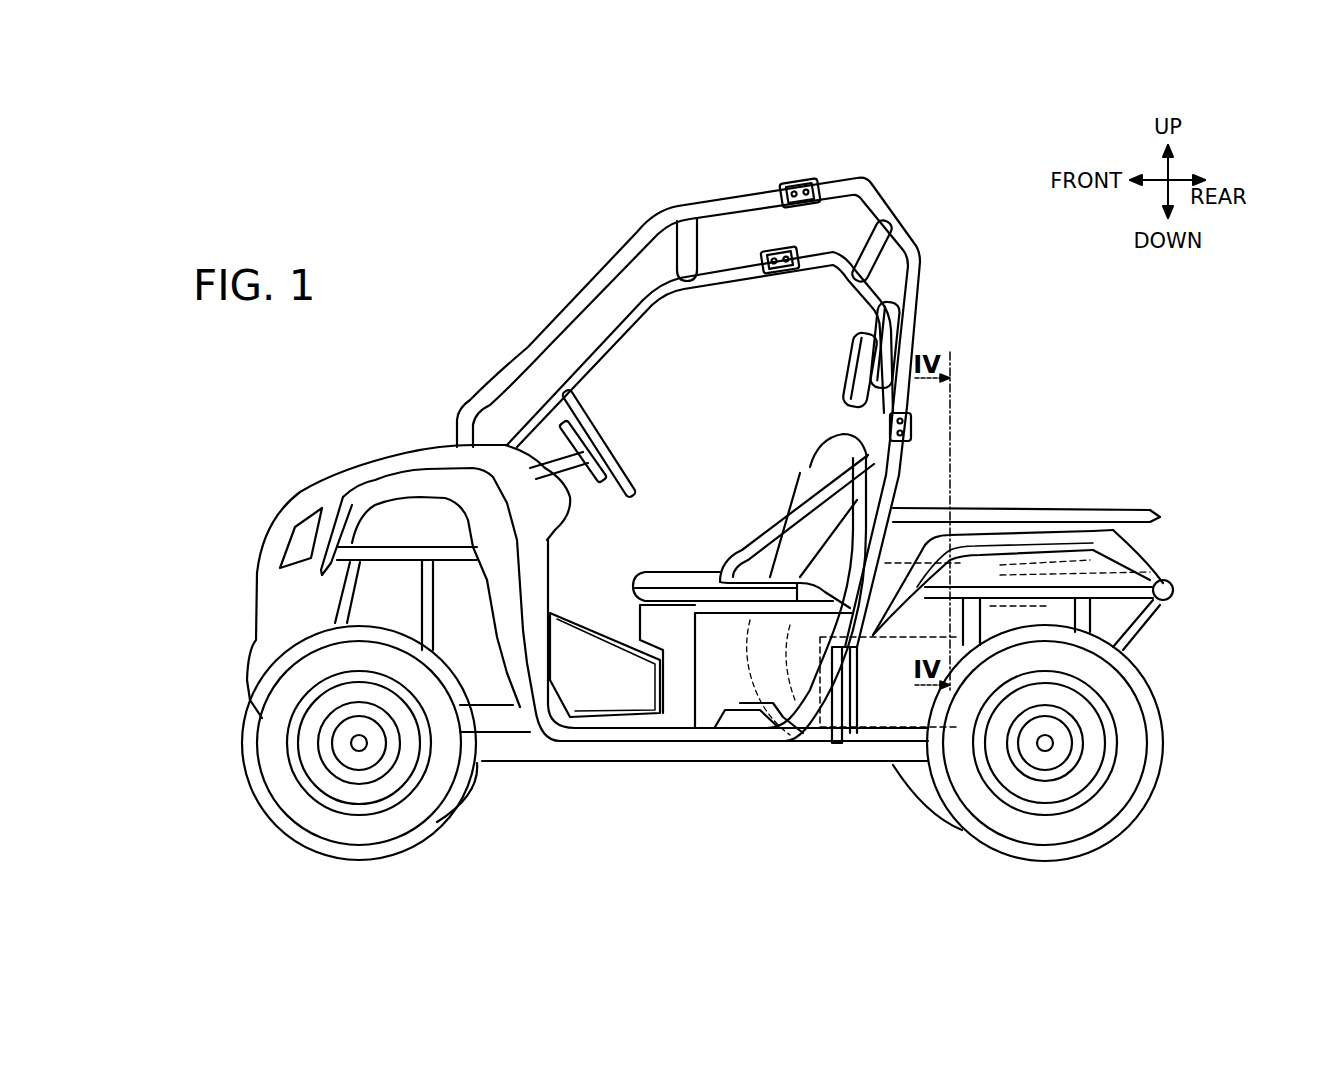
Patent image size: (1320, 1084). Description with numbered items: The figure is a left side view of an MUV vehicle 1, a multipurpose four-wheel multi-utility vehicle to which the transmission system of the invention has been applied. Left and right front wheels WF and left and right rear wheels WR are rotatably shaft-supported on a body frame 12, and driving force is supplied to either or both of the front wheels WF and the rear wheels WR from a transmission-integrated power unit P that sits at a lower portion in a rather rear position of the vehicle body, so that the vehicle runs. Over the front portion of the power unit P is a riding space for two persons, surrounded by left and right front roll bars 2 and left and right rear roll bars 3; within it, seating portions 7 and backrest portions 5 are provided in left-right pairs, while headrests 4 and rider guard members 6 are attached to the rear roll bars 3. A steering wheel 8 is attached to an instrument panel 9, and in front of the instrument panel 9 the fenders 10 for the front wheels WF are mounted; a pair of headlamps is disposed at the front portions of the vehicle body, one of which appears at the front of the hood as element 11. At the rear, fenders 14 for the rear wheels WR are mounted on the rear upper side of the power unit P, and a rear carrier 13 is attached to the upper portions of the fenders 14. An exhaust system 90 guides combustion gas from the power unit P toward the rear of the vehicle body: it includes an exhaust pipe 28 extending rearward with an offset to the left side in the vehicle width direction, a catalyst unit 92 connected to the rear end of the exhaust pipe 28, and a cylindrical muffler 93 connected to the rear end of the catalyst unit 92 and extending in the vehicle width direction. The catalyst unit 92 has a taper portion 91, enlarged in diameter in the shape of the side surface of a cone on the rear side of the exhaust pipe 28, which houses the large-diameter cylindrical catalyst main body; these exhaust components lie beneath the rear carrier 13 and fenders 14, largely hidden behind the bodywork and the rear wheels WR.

The MUV vehicle 1 is at (484, 248).
The front roll bars 2 is at (622, 258).
The rear roll bars 3 is at (920, 315).
The headrests 4 is at (874, 322).
The backrest portions 5 is at (833, 457).
The rider guard members 6 is at (768, 510).
The seating portions 7 is at (686, 570).
The steering wheel 8 is at (598, 440).
The instrument panel 9 is at (565, 510).
The fenders 10 is at (401, 483).
The headlight 11 is at (300, 547).
The body frame 12 is at (715, 754).
The rear carrier 13 is at (1082, 508).
The fenders 14 is at (1137, 557).
The exhaust pipe 28 is at (755, 655).
The exhaust system 90 is at (1020, 540).
The taper portion 91 is at (938, 555).
The catalyst unit 92 is at (988, 545).
The muffler 93 is at (1115, 550).
The power unit P is at (878, 745).
The front wheels WF is at (318, 815).
The rear wheels WR is at (1103, 815).